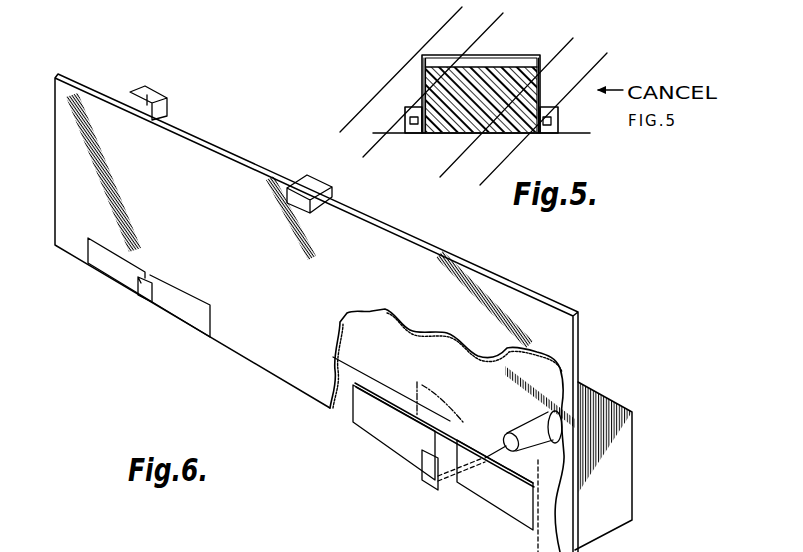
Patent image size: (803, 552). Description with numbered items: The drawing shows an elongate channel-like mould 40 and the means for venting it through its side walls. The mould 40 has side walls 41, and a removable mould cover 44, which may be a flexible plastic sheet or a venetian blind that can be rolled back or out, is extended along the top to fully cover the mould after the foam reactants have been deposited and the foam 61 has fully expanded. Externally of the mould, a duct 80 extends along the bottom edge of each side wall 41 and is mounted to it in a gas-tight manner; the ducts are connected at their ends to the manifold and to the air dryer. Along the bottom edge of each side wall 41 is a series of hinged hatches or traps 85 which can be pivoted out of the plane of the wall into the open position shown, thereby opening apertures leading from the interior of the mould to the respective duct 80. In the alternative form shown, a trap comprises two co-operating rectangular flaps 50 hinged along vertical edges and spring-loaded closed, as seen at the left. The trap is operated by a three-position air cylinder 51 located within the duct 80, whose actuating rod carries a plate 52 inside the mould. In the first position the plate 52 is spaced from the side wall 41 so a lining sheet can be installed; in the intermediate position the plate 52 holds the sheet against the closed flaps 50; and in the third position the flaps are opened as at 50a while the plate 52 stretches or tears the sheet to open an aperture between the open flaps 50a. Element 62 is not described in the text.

In FIG. 5, the mould 40 is at (420, 60).
In FIG. 6, the side wall 41 is at (250, 165).
In FIG. 5, the side wall 41 is at (422, 72).
In FIG. 5, the mould cover 44 is at (498, 56).
In FIG. 6, the flap 50 is at (122, 276).
In FIG. 6, the open flaps 50a is at (444, 421).
In FIG. 6, the three-position air cylinder 51 is at (527, 430).
In FIG. 6, the plate 52 is at (145, 300).
In FIG. 5, the foam 61 is at (507, 88).
In FIG. 5, the top layer 62 is at (460, 60).
In FIG. 6, the duct 80 is at (594, 400).
In FIG. 5, the duct 80 is at (407, 117).
In FIG. 5, the trap 85 is at (417, 128).